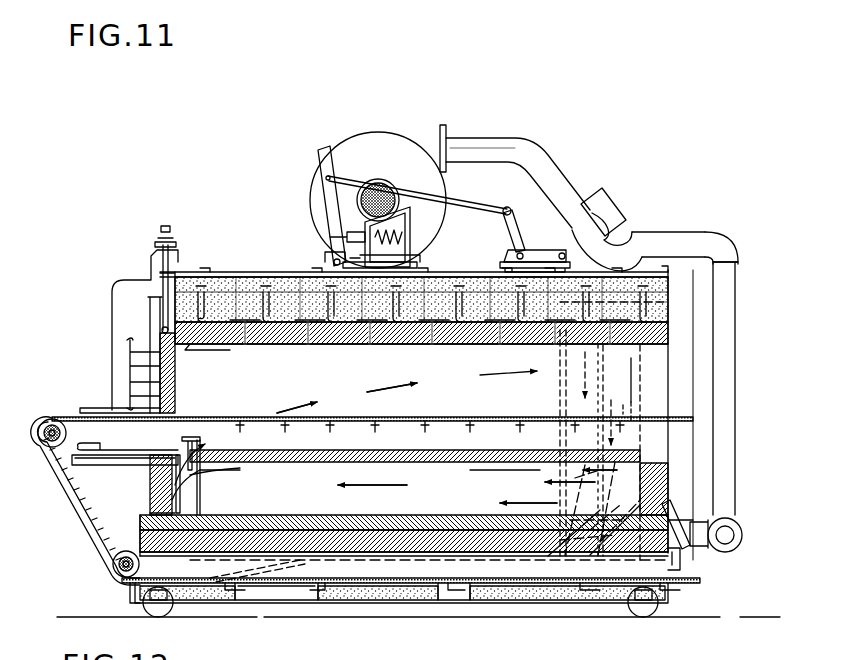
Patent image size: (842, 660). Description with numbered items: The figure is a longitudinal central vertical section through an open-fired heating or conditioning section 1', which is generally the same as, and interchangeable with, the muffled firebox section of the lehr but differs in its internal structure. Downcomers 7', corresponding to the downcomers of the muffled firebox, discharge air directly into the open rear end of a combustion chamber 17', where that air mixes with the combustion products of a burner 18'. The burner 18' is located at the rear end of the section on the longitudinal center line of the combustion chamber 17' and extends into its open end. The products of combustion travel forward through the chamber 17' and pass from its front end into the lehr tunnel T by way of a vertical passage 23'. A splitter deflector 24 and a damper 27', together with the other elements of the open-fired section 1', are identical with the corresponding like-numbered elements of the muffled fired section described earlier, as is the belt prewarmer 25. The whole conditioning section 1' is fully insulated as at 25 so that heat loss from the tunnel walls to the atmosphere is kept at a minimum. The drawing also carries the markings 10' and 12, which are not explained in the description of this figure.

The open-fired heating section 1' is at (405, 421).
The insulation 25 is at (232, 300).
The upper heating air passage 10' is at (372, 508).
The combustion chamber 17' is at (408, 486).
The splitter deflector 24 is at (186, 446).
The vertical passage 23' is at (150, 484).
The downcomers 7' is at (653, 447).
The lehr tunnel T is at (657, 398).
The hearth plate spacing 12 is at (655, 375).
The burner 18' is at (691, 416).
The damper 27' is at (594, 521).